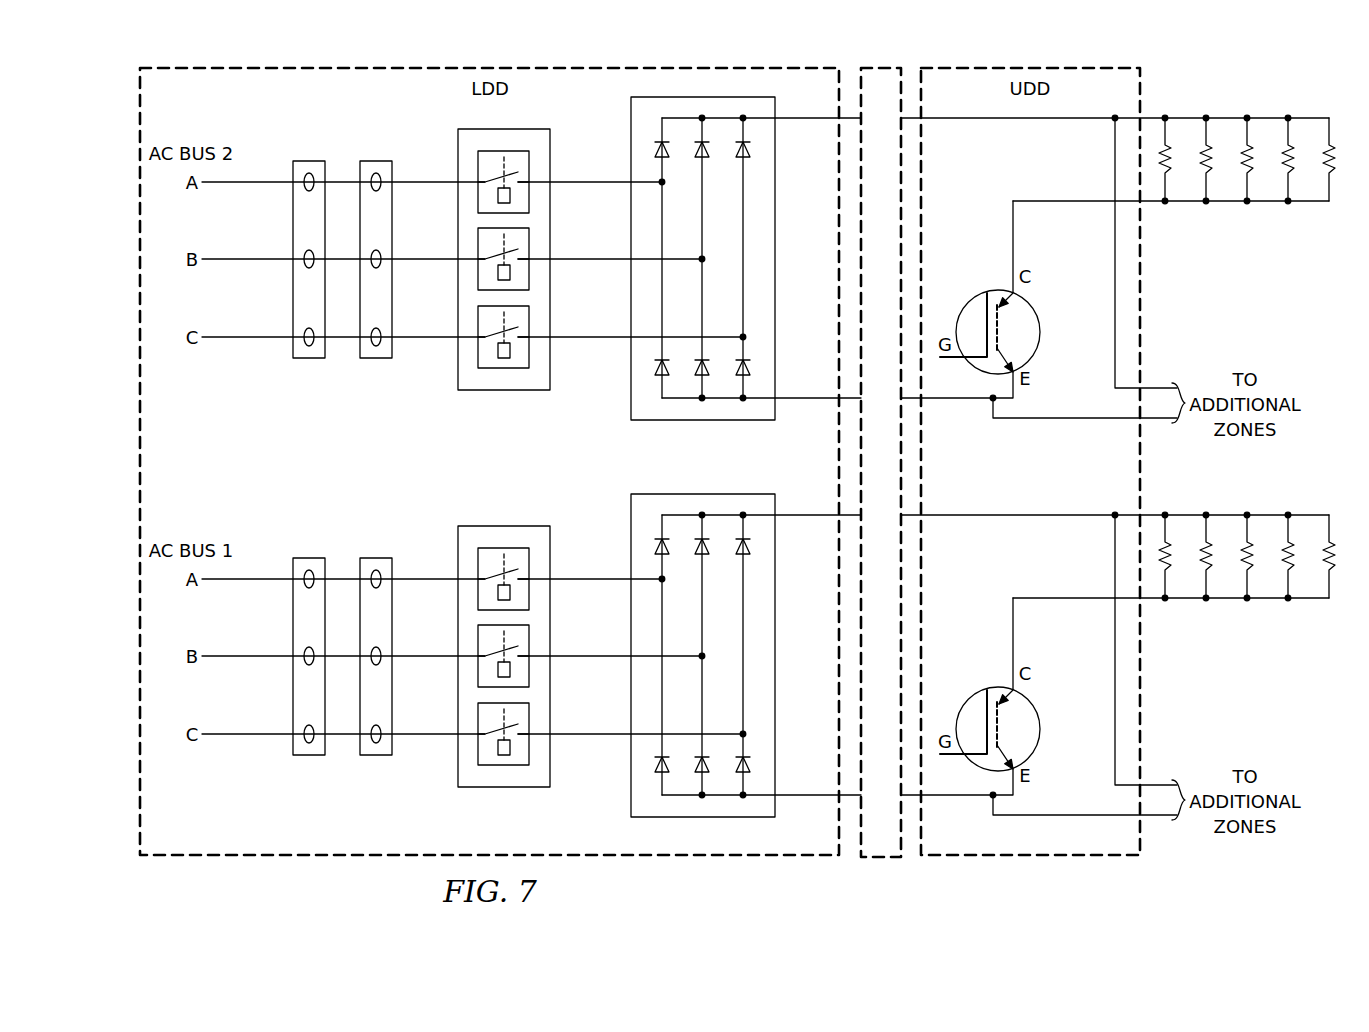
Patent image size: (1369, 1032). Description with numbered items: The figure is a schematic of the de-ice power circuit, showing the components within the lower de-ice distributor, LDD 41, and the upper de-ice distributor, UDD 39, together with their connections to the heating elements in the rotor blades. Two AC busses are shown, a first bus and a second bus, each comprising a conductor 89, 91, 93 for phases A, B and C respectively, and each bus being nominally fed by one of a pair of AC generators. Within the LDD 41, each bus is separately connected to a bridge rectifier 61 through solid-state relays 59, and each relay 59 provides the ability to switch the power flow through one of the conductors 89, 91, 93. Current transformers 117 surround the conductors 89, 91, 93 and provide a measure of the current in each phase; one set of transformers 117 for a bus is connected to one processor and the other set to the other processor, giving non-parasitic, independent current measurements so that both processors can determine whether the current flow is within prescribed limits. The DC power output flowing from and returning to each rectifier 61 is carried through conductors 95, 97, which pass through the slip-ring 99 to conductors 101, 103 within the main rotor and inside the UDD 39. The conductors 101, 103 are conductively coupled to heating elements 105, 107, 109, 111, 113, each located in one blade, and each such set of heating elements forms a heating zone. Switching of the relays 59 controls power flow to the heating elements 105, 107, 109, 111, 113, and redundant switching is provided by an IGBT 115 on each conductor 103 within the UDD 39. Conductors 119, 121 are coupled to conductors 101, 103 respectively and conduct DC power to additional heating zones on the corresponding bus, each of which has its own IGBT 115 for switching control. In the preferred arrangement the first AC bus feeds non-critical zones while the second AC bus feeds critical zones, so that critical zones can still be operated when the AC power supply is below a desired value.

The UDD 39 is at (1141, 343).
The LDD 41 is at (138, 460).
The solid-state relay 59 is at (473, 168).
The bridge rectifier 61 is at (779, 283).
The conductor 89 is at (596, 181).
The conductor 91 is at (596, 258).
The conductor 93 is at (596, 340).
The conductor 95 is at (797, 122).
The conductor 97 is at (797, 395).
The slip-ring 99 is at (880, 857).
The conductor 101 is at (944, 120).
The conductor 103 is at (1063, 200).
The heating element 105 is at (1171, 160).
The heating element 107 is at (1211, 153).
The heating element 109 is at (1253, 160).
The heating element 111 is at (1293, 153).
The heating element 113 is at (1334, 160).
The IGBT 115 is at (995, 290).
The current transformer 117 is at (309, 163).
The conductor 119 is at (1114, 266).
The conductor 121 is at (1062, 420).